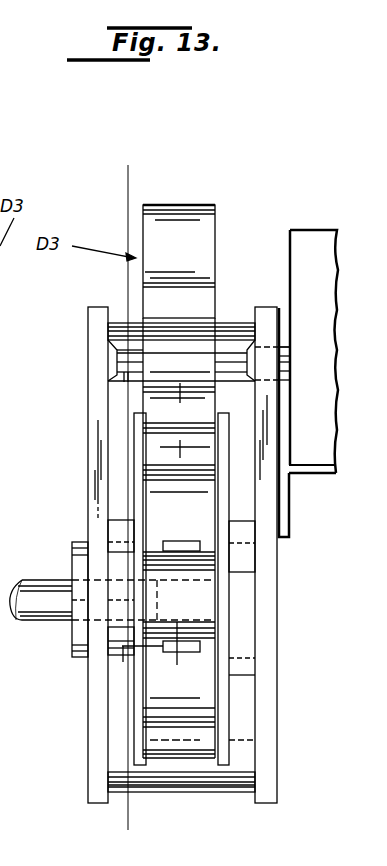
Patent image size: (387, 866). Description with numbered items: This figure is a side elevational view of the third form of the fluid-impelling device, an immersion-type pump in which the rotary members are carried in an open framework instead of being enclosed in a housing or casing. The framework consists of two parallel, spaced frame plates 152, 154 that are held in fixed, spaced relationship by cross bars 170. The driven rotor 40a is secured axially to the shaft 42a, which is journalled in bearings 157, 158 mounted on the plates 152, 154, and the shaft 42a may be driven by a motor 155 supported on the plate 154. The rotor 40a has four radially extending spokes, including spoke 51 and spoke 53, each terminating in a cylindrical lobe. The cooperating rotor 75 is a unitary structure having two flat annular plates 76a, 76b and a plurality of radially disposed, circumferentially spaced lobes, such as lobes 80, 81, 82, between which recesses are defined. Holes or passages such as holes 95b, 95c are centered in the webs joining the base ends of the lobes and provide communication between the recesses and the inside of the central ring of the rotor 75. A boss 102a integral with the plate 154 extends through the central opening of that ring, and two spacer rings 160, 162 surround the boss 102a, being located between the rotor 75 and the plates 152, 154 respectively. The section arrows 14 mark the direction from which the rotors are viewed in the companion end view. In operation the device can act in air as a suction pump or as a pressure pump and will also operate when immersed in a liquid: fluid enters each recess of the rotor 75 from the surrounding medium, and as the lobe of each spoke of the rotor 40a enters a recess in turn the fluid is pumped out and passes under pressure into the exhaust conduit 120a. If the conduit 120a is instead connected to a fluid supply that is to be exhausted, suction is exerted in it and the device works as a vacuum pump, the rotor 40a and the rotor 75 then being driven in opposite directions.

The section line 14 is at (152, 176).
The spoke 53 is at (172, 222).
The rotor 40a is at (156, 238).
The motor 155 is at (305, 240).
The frame plate 154 is at (262, 300).
The spoke 51 is at (210, 353).
The bearing 158 is at (262, 349).
The rotor 75 is at (297, 725).
The bearing 157 is at (117, 355).
The shaft 42a is at (123, 373).
The frame plate 152 is at (97, 452).
The lobe 80 is at (157, 462).
The hole 95b is at (183, 541).
The spacer ring 160 is at (125, 530).
The spacer ring 162 is at (245, 558).
The lobe 81 is at (205, 588).
The exhaust conduit 120a is at (58, 603).
The hole 95c is at (196, 640).
The boss 102a is at (83, 661).
The annular plate 76a is at (220, 703).
The annular plate 76b is at (138, 720).
The lobe 82 is at (205, 740).
The cross bars 170 is at (207, 782).